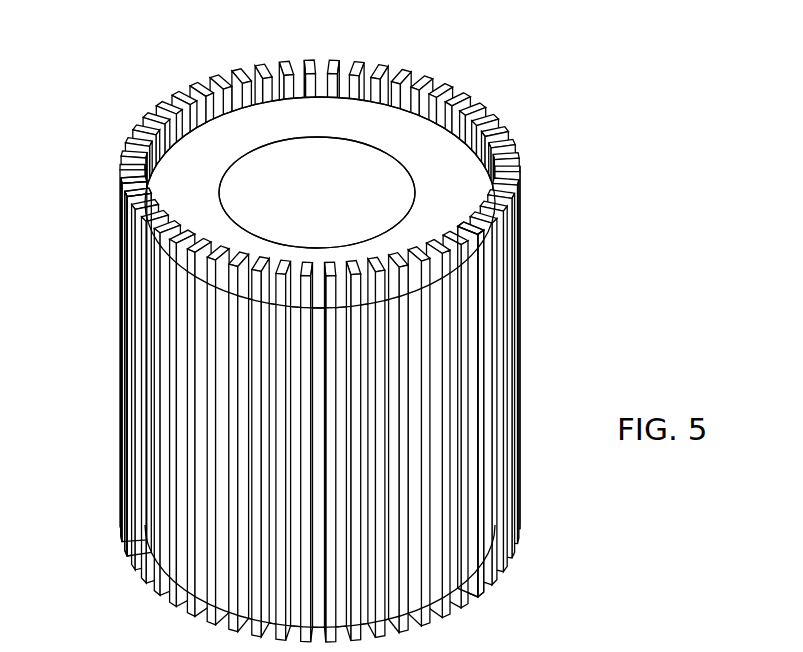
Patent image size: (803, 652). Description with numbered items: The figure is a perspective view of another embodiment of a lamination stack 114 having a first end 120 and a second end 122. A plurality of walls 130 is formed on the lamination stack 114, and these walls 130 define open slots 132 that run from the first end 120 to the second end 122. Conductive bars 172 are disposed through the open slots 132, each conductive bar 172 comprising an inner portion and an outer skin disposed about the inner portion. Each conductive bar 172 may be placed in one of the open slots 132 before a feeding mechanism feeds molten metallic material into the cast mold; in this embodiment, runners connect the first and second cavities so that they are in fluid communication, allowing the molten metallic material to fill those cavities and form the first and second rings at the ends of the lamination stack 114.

The lamination stack 114 is at (135, 70).
The first end 120 is at (443, 610).
The second end 122 is at (453, 184).
The walls 130 is at (163, 318).
The open slots 132 is at (163, 372).
The conductive bars 172 is at (470, 113).